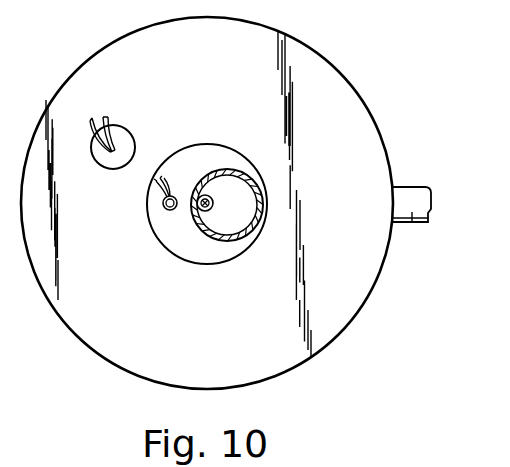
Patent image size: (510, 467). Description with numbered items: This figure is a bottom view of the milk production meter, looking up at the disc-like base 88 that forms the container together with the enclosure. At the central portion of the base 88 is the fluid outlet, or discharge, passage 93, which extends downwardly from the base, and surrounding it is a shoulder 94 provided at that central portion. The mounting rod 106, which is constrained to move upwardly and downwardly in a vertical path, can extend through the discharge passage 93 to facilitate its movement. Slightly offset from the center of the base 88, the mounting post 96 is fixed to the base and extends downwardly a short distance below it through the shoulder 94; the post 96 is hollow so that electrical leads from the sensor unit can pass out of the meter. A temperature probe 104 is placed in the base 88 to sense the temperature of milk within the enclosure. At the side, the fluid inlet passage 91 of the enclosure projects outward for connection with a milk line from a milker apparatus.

The base 88 is at (194, 85).
The fluid inlet passage 91 is at (412, 223).
The fluid outlet passage 93 is at (238, 237).
The shoulder 94 is at (200, 265).
The mounting post 96 is at (163, 205).
The temperature probe 104 is at (128, 131).
The mounting rod 106 is at (203, 212).